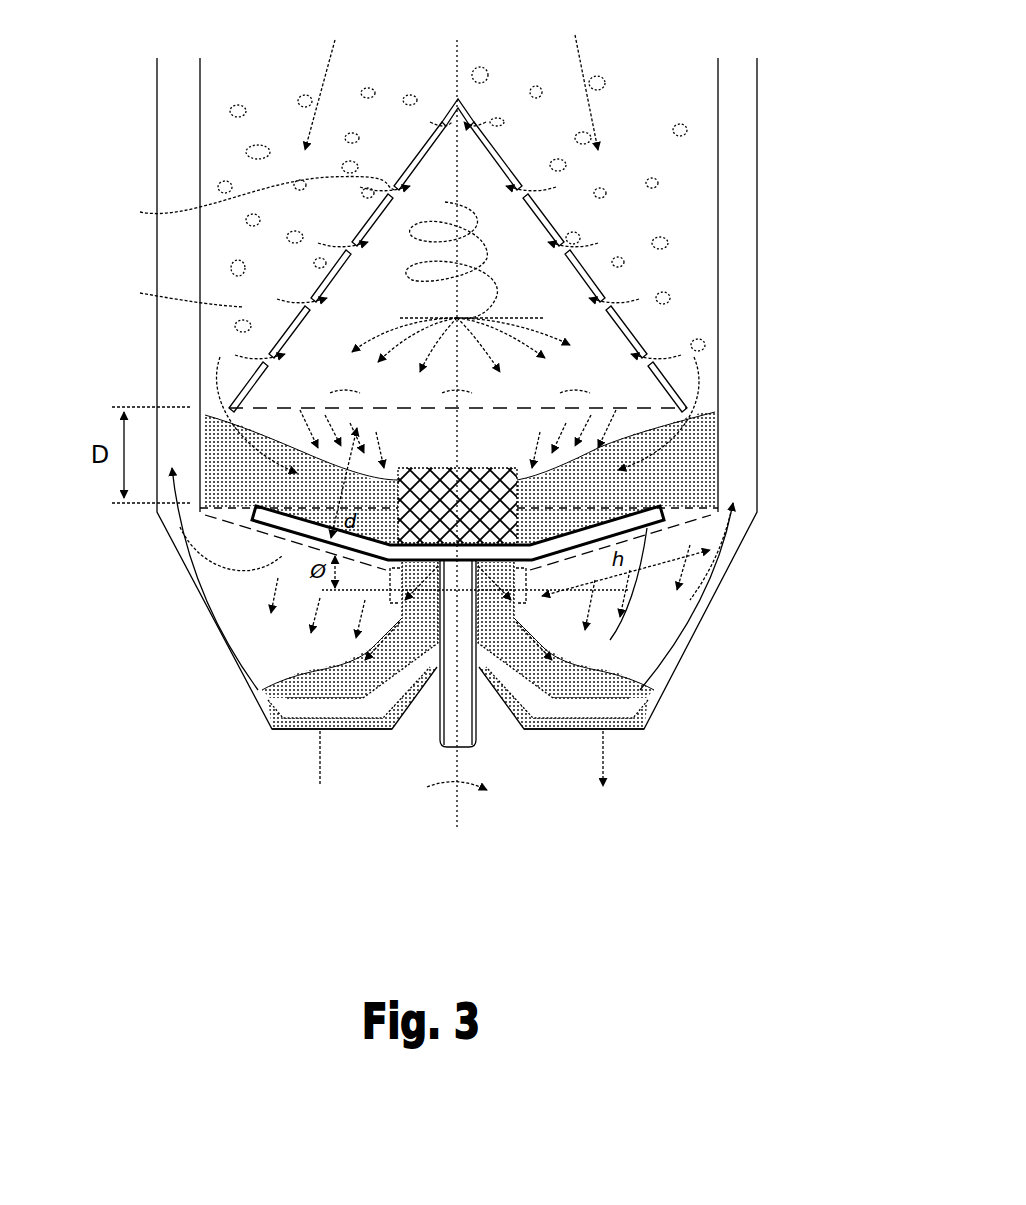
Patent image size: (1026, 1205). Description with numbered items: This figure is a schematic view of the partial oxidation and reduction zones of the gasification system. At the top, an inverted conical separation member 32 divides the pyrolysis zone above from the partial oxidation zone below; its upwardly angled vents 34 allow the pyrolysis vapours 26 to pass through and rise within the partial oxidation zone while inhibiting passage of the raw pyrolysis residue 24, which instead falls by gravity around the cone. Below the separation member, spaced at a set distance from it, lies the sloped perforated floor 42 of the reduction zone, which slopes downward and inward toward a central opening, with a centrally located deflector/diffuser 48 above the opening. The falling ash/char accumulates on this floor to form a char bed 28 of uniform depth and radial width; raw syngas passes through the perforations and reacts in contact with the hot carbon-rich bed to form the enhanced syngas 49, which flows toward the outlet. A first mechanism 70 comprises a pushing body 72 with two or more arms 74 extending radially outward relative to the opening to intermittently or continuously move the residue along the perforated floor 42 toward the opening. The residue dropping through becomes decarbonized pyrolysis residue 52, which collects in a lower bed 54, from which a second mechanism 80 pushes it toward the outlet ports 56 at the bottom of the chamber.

The pyrolysis residue 24 is at (140, 293).
The pyrolysis vapours 26 is at (140, 212).
The char bed 28 is at (698, 470).
The separation member 32 is at (603, 273).
The upwardly angled vents 34 is at (568, 244).
The sloped perforated floor 42 is at (690, 512).
The deflector/diffuser 48 is at (497, 518).
The enhanced syngas 49 is at (180, 527).
The decarbonized pyrolysis residue 52 is at (590, 676).
The lower bed 54 is at (270, 680).
The outlet port 56 is at (459, 775).
The first mechanism 70 is at (472, 698).
The pushing body 72 is at (600, 662).
The arms 74 is at (257, 522).
The second mechanism 80 is at (632, 729).